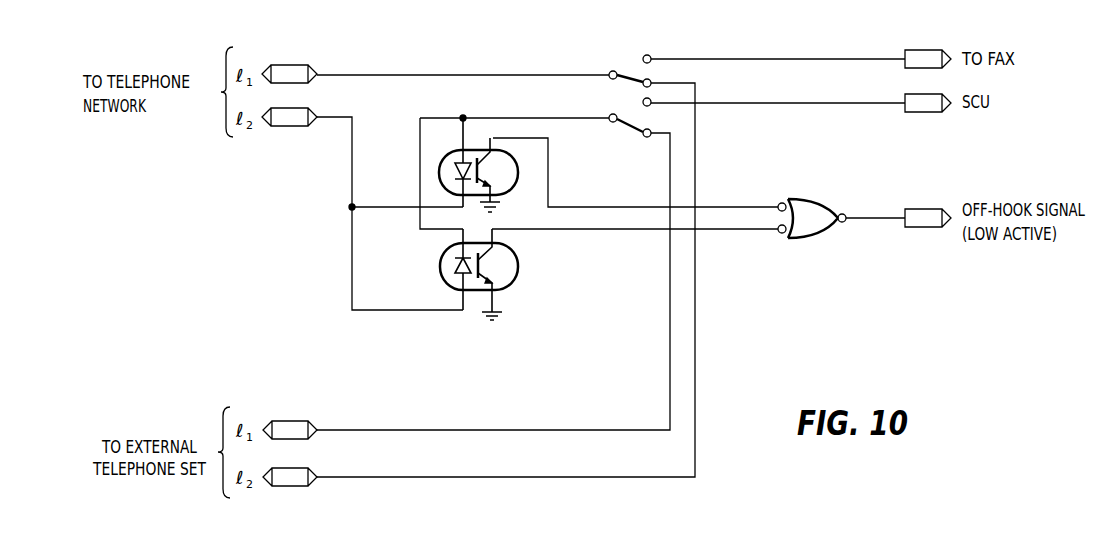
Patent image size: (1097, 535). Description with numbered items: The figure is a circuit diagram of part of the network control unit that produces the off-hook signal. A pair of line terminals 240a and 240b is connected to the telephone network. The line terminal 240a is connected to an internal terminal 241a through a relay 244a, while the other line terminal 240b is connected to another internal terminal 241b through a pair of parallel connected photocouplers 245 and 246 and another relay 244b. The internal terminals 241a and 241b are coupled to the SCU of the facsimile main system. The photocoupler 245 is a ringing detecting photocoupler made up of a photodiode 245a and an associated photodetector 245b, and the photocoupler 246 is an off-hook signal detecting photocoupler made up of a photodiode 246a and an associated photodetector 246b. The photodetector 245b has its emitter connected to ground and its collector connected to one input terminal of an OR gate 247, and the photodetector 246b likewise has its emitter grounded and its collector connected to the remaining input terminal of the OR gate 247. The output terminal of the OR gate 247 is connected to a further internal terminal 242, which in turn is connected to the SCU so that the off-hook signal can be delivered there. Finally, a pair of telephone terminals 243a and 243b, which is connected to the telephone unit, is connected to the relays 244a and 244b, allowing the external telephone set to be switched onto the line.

The line terminal 240a is at (292, 65).
The line terminal 240b is at (287, 127).
The internal terminal 241a is at (922, 52).
The internal terminal 241b is at (917, 108).
The internal terminal 242 is at (925, 211).
The telephone terminal 243a is at (295, 422).
The telephone terminal 243b is at (290, 486).
The relay 244a is at (627, 73).
The relay 244b is at (628, 128).
The ringing detecting photocoupler 245 is at (438, 166).
The photodiode 245a is at (455, 162).
The photodetector 245b is at (484, 158).
The off-hook signal detecting photocoupler 246 is at (513, 281).
The photodiode 246a is at (455, 263).
The photodetector 246b is at (488, 262).
The OR gate 247 is at (808, 201).